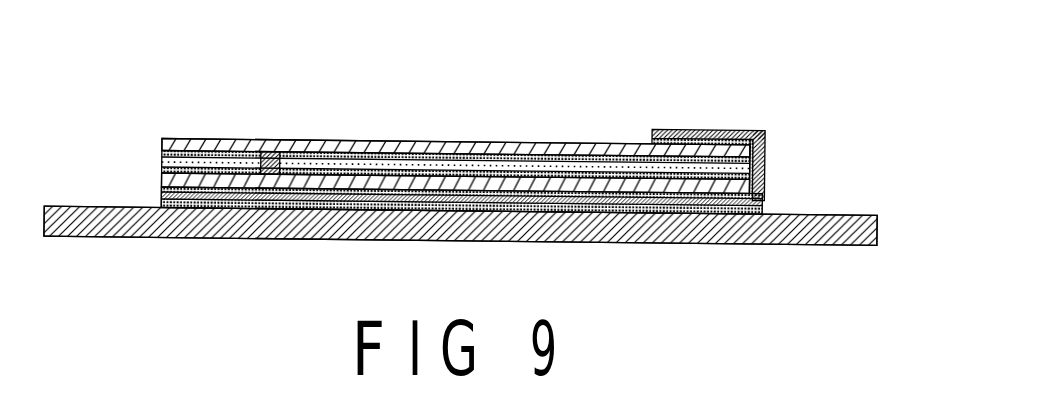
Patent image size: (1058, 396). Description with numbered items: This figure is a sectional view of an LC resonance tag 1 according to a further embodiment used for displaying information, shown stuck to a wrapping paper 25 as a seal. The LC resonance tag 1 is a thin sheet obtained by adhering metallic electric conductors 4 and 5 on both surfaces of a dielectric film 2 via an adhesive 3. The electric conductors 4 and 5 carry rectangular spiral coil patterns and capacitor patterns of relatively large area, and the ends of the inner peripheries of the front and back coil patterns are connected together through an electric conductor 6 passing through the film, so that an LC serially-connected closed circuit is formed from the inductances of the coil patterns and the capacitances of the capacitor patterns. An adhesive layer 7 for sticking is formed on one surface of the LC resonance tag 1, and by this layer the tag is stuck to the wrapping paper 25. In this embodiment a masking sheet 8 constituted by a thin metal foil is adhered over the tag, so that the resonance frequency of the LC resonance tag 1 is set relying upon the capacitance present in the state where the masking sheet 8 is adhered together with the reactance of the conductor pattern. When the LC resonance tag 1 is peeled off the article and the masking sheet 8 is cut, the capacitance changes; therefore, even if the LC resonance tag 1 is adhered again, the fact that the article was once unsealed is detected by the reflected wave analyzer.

The LC resonance tag 1 is at (464, 130).
The dielectric film 2 is at (162, 160).
The adhesive 3 is at (162, 152).
The electric conductor 4 is at (196, 138).
The electric conductor 5 is at (162, 177).
The electric conductor 6 is at (265, 156).
The adhesive layer 7 is at (765, 207).
The masking sheet 8 is at (710, 129).
The wrapping paper 25 is at (847, 215).